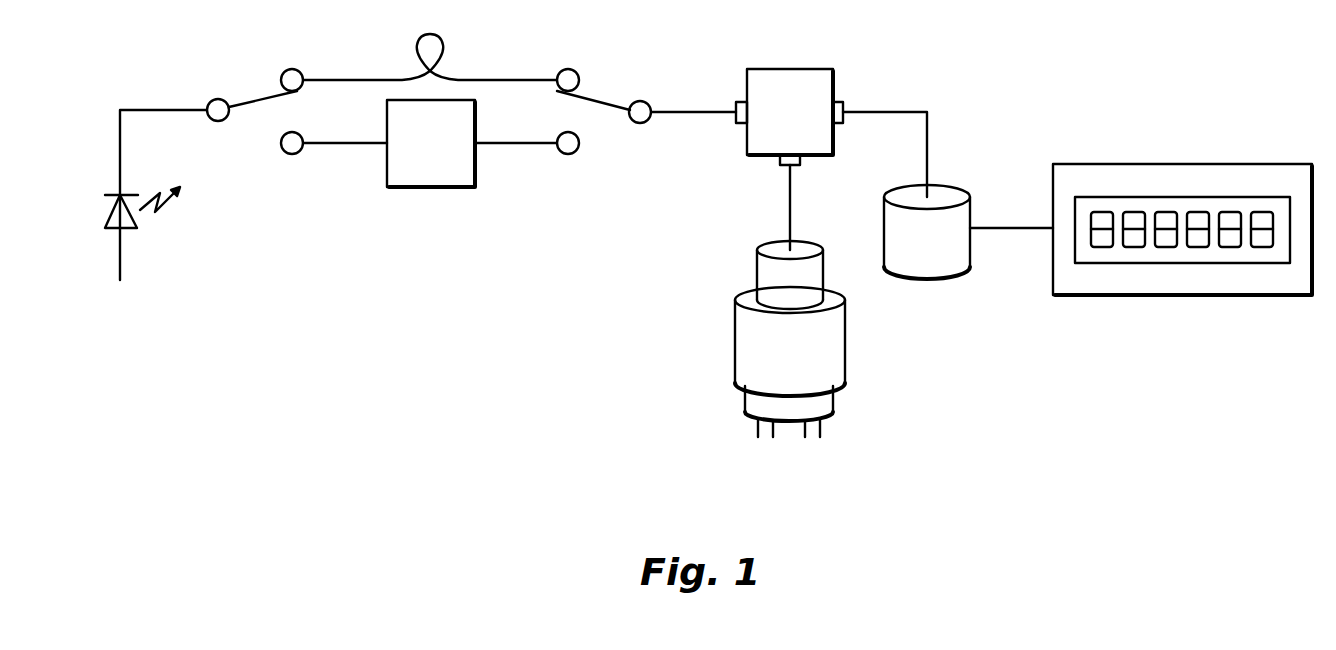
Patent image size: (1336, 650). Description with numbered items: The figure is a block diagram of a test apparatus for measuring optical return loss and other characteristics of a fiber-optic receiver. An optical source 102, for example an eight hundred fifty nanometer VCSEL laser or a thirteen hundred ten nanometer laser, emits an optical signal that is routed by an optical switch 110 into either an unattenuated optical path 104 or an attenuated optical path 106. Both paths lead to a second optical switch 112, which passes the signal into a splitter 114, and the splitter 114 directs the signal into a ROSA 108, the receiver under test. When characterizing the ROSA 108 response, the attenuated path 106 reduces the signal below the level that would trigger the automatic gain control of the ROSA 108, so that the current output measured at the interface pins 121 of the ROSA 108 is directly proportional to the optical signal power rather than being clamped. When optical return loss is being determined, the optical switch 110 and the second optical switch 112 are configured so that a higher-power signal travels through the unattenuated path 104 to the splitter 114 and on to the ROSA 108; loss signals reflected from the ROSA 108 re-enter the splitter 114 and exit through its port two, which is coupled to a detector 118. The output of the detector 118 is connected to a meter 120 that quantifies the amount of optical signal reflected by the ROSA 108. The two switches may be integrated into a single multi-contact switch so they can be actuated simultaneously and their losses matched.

The optical source 102 is at (115, 233).
The unattenuated optical path 104 is at (342, 78).
The attenuated optical path 106 is at (342, 148).
The ROSA 108 is at (845, 338).
The optical switch 110 is at (259, 98).
The second optical switch 112 is at (600, 96).
The splitter 114 is at (790, 69).
The detector 118 is at (945, 185).
The meter 120 is at (1180, 164).
The interface pins 121 is at (822, 425).